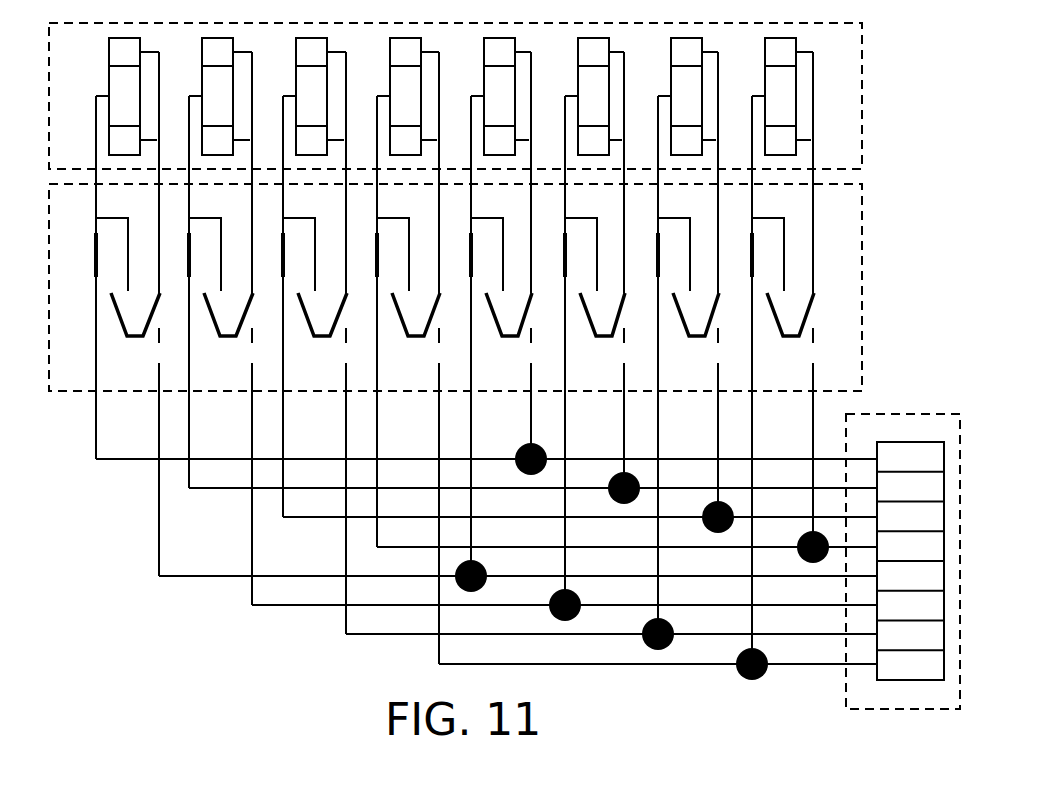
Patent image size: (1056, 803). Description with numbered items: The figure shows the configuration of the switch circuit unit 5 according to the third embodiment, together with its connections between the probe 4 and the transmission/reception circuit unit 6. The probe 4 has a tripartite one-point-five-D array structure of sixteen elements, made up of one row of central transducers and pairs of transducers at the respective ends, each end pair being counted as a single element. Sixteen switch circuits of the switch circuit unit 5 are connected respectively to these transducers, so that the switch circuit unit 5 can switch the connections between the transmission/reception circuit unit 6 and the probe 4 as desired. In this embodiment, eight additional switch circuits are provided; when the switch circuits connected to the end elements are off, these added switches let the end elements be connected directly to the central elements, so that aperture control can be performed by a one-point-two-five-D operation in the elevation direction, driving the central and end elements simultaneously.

The probe 4 is at (853, 65).
The switch circuit unit 5 is at (853, 280).
The transmission/reception circuit unit 6 is at (962, 448).